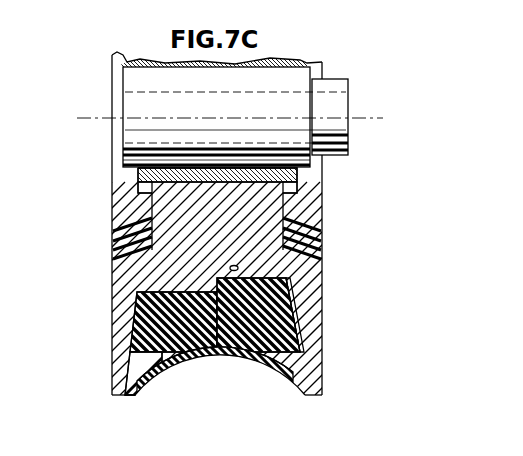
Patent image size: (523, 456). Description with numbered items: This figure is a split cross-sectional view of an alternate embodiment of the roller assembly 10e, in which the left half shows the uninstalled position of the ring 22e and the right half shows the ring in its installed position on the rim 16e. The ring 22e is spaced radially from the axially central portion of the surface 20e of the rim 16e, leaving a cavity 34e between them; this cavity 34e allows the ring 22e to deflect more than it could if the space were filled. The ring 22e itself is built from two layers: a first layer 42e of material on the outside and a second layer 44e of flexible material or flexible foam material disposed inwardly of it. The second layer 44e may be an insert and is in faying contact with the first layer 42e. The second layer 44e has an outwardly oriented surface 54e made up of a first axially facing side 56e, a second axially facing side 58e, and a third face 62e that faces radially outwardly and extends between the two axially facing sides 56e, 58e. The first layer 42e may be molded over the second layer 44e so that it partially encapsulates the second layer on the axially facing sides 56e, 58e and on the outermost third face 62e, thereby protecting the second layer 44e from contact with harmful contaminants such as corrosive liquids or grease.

The roller assembly 10e is at (338, 378).
The rim 16e is at (283, 270).
The surface of the rim 20e is at (238, 264).
The ring 22e is at (278, 392).
The cavity 34e is at (197, 275).
The first layer of material 42e is at (165, 381).
The second layer of flexible material 44e is at (213, 285).
The outwardly oriented surface 54e is at (147, 392).
The first axially facing side 56e is at (127, 330).
The second axially facing side 58e is at (300, 310).
The third face 62e is at (302, 342).